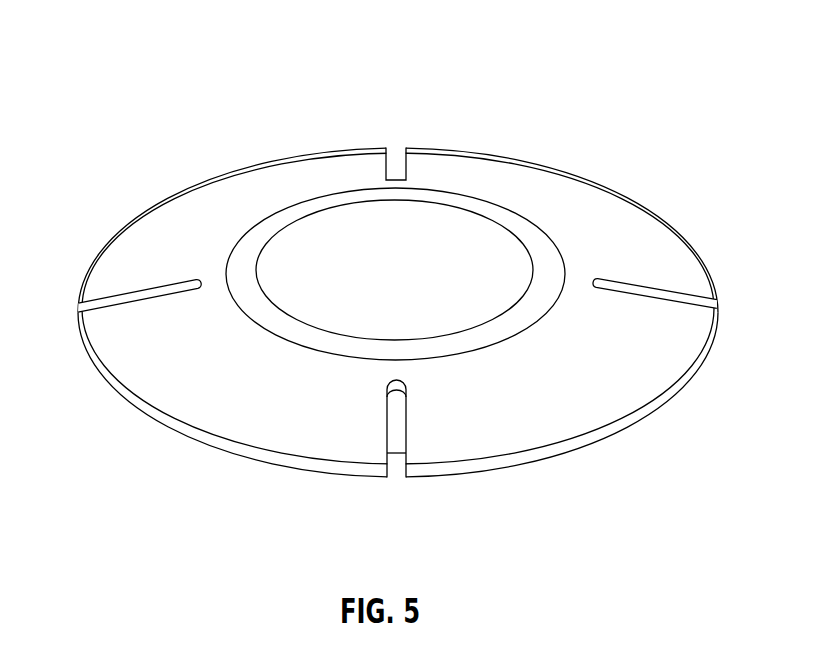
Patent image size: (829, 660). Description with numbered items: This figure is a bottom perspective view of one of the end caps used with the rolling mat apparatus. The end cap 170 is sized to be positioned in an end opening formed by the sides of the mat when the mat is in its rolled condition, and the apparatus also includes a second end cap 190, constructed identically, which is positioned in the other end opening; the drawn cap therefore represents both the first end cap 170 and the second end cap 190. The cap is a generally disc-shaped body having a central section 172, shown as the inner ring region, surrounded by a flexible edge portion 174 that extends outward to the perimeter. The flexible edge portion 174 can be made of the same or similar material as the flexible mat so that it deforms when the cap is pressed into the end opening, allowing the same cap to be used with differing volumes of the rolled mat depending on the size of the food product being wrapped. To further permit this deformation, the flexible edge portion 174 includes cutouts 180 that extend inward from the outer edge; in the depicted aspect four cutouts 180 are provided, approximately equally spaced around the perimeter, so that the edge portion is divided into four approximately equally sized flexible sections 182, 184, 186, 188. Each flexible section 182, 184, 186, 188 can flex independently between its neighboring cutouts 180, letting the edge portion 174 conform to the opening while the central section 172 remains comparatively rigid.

The end cap 170 is at (603, 210).
The second end cap 190 is at (398, 281).
The central section 172 is at (428, 230).
The flexible edge portion 174 is at (655, 382).
The cutouts 180 is at (385, 165).
The flexible section 182 is at (662, 247).
The flexible section 184 is at (163, 213).
The flexible section 186 is at (538, 425).
The flexible section 188 is at (165, 388).